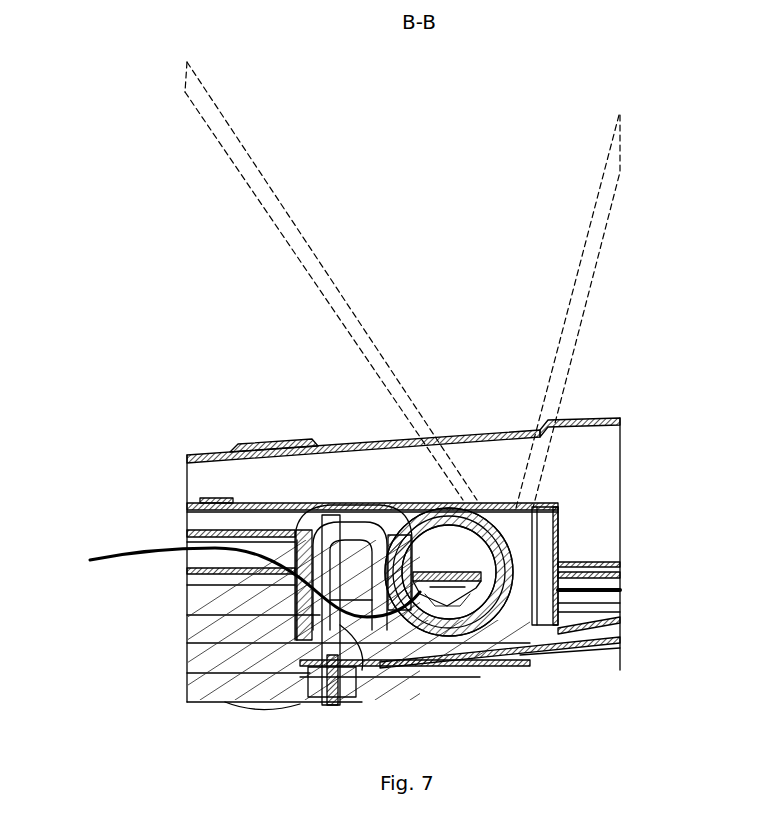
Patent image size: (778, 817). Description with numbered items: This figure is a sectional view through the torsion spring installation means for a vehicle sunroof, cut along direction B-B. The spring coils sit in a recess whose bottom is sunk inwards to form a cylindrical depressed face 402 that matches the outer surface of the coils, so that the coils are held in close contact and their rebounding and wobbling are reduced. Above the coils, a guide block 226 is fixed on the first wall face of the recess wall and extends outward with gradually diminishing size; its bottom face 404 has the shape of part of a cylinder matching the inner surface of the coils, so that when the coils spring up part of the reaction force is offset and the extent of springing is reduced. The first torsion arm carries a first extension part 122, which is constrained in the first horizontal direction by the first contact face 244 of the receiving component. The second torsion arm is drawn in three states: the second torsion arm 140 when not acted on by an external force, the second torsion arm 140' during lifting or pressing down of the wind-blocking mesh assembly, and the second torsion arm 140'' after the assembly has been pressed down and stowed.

The second torsion arm 140 is at (586, 311).
The second torsion arm 140' is at (331, 281).
The second torsion arm 140'' is at (358, 564).
The first extension part 122 is at (322, 620).
The guide block 226 is at (478, 612).
The first contact face 244 is at (360, 670).
The cylindrical depressed face 402 is at (447, 625).
The bottom face of the guide block 404 is at (230, 580).